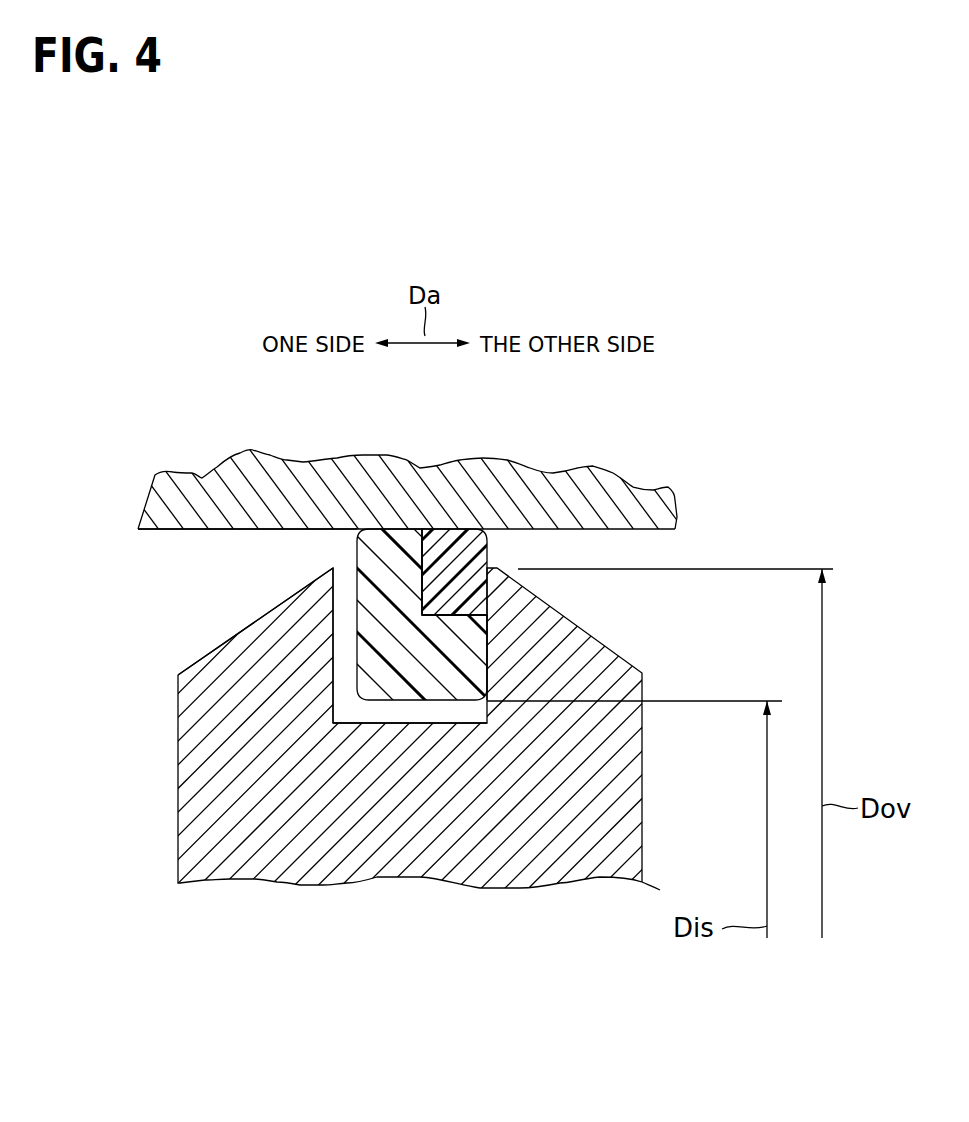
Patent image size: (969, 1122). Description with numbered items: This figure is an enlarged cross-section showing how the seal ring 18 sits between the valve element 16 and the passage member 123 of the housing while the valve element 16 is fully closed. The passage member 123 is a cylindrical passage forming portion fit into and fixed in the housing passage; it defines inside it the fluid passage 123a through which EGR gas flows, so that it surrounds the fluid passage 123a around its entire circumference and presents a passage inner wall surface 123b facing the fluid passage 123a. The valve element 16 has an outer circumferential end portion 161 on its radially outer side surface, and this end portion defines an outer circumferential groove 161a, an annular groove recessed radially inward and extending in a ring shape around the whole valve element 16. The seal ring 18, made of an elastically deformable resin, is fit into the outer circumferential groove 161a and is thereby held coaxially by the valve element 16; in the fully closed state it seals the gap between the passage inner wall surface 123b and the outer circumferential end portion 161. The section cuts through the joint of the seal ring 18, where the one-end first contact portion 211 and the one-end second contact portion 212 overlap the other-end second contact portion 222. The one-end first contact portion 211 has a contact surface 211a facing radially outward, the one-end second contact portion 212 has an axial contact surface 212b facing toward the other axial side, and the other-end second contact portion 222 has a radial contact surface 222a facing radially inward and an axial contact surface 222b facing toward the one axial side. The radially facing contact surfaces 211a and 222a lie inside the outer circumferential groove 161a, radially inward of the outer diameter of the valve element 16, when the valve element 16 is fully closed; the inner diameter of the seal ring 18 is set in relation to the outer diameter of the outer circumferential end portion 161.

The valve element 16 is at (175, 859).
The outer circumferential end portion 161 is at (283, 622).
The outer circumferential groove 161a is at (352, 651).
The seal ring 18 is at (348, 700).
The passage member 123 is at (637, 503).
The fluid passage 123a is at (200, 612).
The passage inner wall surface 123b is at (190, 530).
The one-end first contact portion 211 is at (467, 663).
The contact surface 211a is at (473, 613).
The one-end second contact portion 212 is at (378, 546).
The axial contact surface 212b is at (428, 553).
The other-end second contact portion 222 is at (485, 565).
The radial contact surface 222a is at (487, 641).
The axial contact surface 222b is at (405, 562).